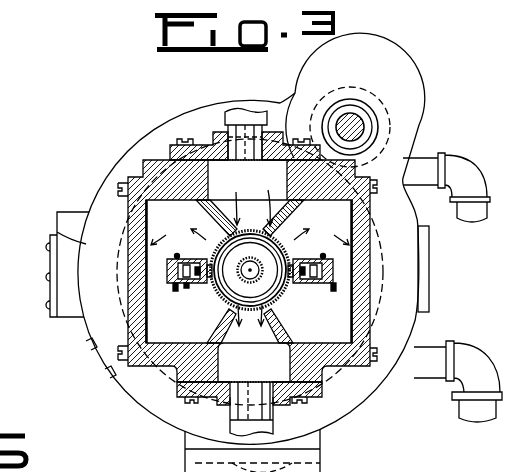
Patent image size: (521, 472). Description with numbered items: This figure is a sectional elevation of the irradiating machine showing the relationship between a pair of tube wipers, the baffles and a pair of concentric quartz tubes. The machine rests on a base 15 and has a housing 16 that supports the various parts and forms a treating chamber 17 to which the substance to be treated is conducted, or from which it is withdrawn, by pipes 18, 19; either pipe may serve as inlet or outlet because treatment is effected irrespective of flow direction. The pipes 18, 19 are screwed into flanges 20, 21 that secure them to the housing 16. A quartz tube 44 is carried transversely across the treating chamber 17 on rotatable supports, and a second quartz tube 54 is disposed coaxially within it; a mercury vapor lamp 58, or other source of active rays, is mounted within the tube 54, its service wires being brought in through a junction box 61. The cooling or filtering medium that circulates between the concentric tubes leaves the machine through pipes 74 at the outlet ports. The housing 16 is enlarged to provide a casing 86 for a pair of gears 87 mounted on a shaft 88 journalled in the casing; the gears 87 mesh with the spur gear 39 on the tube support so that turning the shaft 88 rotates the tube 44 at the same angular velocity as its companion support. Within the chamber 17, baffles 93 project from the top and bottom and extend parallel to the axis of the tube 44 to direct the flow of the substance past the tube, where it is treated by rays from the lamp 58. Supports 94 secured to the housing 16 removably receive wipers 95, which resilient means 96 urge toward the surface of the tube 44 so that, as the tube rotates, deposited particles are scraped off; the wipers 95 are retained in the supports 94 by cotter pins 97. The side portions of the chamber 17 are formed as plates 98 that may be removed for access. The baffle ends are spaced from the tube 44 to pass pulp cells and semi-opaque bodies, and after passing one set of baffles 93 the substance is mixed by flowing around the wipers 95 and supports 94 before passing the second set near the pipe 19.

The base 15 is at (322, 460).
The housing 16 is at (107, 177).
The treating chamber 17 is at (250, 272).
The pipe 18 is at (224, 116).
The pipe 19 is at (276, 424).
The flange 20 is at (204, 143).
The flange 21 is at (218, 391).
The spur gear 39 is at (383, 318).
The quartz tube 44 is at (283, 252).
The quartz tube 54 is at (252, 303).
The mercury vapor lamp 58 is at (263, 278).
The junction box 61 is at (53, 318).
The pipe 74 is at (474, 220).
The casing 86 is at (418, 113).
The gear 87 is at (385, 111).
The shaft 88 is at (353, 118).
The baffle 93 is at (214, 214).
The support 94 is at (192, 282).
The wiper 95 is at (211, 263).
The resilient means 96 is at (185, 285).
The cotter pin 97 is at (170, 286).
The plate 98 is at (140, 241).